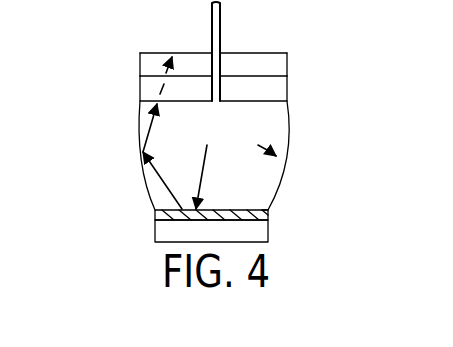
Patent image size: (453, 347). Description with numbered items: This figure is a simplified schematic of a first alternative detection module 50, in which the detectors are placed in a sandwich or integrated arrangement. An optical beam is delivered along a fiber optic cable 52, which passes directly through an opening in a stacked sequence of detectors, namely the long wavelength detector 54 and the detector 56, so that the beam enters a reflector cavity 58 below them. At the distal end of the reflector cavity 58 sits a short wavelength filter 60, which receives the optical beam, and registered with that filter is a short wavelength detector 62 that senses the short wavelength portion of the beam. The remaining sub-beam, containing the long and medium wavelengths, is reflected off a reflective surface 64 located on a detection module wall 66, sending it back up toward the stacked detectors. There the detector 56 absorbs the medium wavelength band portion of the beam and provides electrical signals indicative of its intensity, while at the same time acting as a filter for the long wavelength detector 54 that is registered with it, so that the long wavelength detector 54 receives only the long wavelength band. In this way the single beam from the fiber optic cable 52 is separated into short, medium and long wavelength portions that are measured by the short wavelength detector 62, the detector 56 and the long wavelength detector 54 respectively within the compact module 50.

The first alternative detection module 50 is at (110, 152).
The fiber optic cable 52 is at (212, 25).
The long wavelength detector 54 is at (140, 57).
The detector 56 is at (140, 80).
The reflector cavity 58 is at (283, 160).
The short wavelength filter 60 is at (155, 215).
The short wavelength detector 62 is at (155, 236).
The reflective surface 64 is at (245, 211).
The detection module wall 66 is at (140, 112).